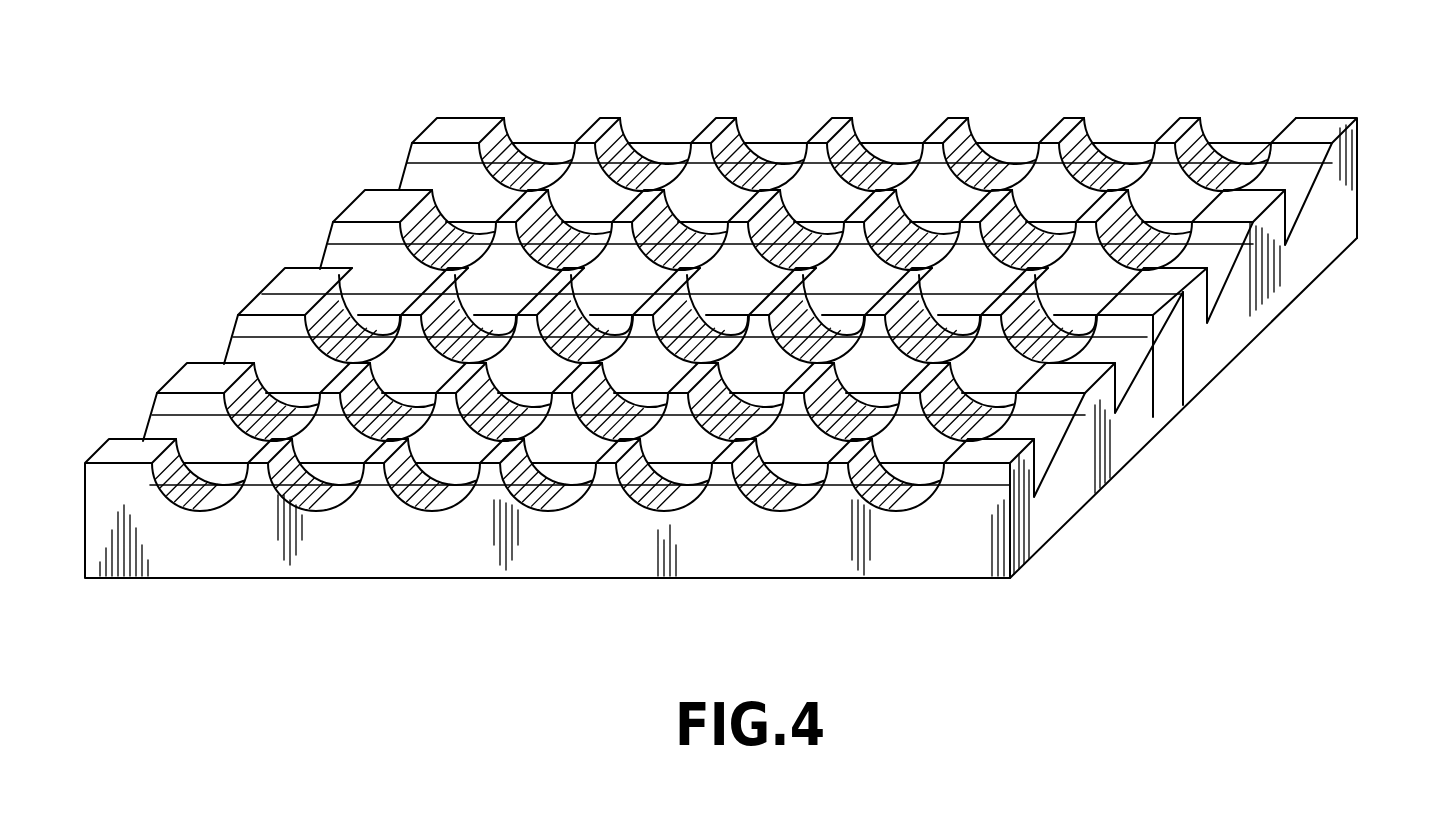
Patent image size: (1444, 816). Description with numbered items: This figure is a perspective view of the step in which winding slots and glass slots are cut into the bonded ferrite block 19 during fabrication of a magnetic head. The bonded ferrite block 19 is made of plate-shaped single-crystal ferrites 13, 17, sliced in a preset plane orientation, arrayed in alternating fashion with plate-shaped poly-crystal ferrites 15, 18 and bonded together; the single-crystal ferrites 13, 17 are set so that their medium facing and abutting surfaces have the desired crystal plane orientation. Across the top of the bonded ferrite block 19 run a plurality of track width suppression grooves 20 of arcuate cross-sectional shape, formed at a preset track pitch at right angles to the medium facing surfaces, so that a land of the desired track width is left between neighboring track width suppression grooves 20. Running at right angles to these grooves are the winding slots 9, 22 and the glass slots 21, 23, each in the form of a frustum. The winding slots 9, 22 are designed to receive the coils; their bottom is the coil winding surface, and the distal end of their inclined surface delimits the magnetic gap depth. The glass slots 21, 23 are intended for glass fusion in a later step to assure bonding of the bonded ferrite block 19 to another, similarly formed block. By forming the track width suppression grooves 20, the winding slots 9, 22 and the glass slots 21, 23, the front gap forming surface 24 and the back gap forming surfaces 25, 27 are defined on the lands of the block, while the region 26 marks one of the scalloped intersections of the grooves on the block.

The bonded ferrite block 19 is at (218, 228).
The track width suppression groove 20 is at (513, 140).
The front gap forming surface 24 is at (835, 130).
The back gap forming surface 25 is at (648, 188).
The groove intersection 26 is at (420, 298).
The back gap forming surface 27 is at (450, 393).
The single-crystal ferrite 13 is at (1345, 184).
The winding slot 9 is at (1300, 222).
The poly-crystal ferrite 15 is at (1290, 270).
The glass slot 21 is at (1214, 300).
The single-crystal ferrite 17 is at (1172, 404).
The winding slot 22 is at (1122, 395).
The glass slot 23 is at (1045, 470).
The poly-crystal ferrite 18 is at (1028, 548).